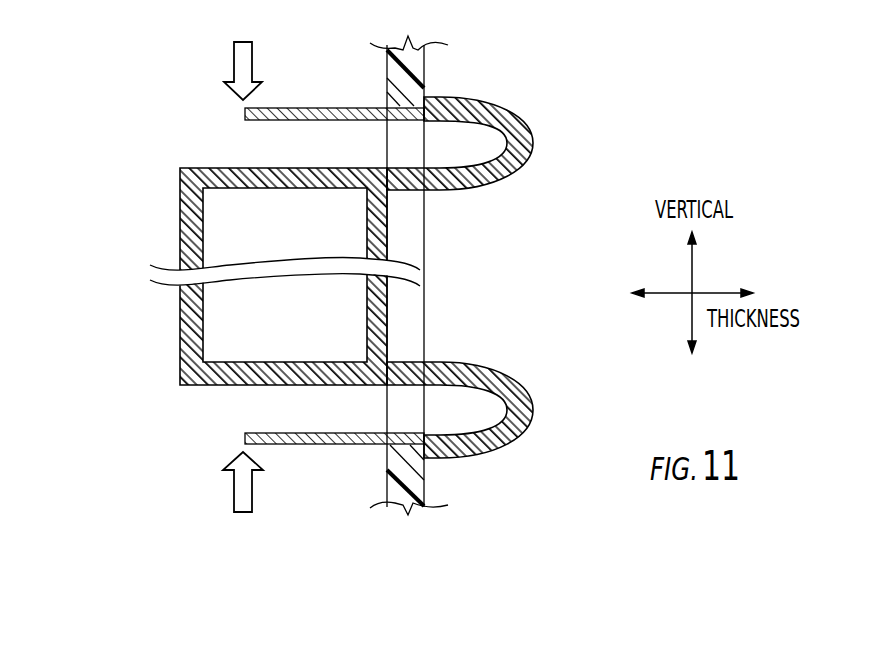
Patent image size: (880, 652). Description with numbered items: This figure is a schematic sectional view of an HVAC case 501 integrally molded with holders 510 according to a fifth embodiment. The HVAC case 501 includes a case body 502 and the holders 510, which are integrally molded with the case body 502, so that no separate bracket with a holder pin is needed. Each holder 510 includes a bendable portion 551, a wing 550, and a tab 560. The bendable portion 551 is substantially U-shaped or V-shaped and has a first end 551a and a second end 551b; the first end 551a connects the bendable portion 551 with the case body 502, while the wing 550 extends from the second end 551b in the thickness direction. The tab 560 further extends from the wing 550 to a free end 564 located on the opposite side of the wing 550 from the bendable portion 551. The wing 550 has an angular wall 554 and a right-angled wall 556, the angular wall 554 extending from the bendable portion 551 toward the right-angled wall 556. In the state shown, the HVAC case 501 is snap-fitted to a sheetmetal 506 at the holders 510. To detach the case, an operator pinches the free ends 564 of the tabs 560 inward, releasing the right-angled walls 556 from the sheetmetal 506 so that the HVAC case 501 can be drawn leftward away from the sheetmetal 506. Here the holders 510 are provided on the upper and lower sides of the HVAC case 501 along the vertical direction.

The HVAC case 501 is at (178, 361).
The case body 502 is at (213, 285).
The sheetmetal 506 is at (412, 482).
The holder 510 is at (339, 266).
The wing 550 is at (486, 462).
The bendable portion 551 is at (503, 445).
The first end 551a is at (506, 127).
The second end 551b is at (506, 106).
The angular wall 554 is at (455, 97).
The right-angled wall 556 is at (422, 97).
The tab 560 is at (285, 86).
The free end 564 is at (243, 114).